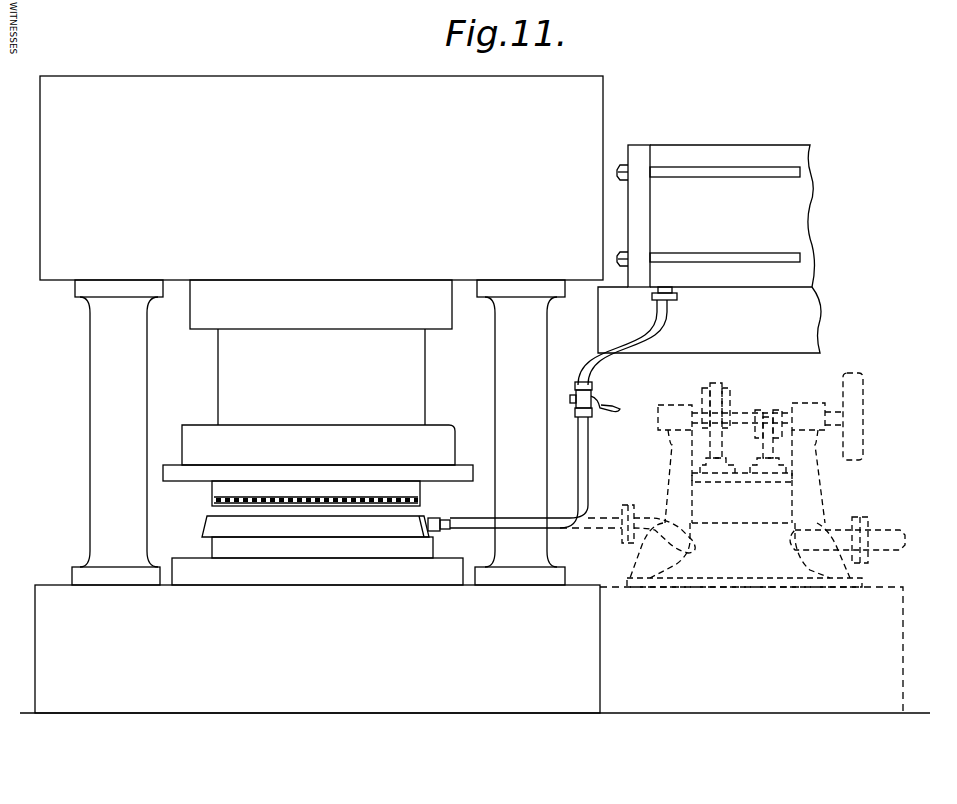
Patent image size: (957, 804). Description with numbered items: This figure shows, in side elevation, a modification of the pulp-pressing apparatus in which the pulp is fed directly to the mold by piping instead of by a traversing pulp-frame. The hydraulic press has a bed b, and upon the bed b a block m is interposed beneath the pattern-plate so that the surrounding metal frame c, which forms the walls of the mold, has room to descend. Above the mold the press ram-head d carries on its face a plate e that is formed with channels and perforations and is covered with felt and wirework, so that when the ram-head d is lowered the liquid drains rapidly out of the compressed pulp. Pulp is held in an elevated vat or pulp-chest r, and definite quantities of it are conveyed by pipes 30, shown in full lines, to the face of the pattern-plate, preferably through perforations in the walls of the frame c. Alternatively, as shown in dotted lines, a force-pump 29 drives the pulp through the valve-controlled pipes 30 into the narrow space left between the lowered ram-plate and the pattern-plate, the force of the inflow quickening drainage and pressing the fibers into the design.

The bed b is at (475, 649).
The frame c is at (326, 527).
The ram-head d is at (318, 453).
The plate e is at (367, 500).
The block m is at (317, 560).
The vat or pulp-chest r is at (709, 249).
The force-pump 29 is at (766, 480).
The pipes 30 is at (655, 343).